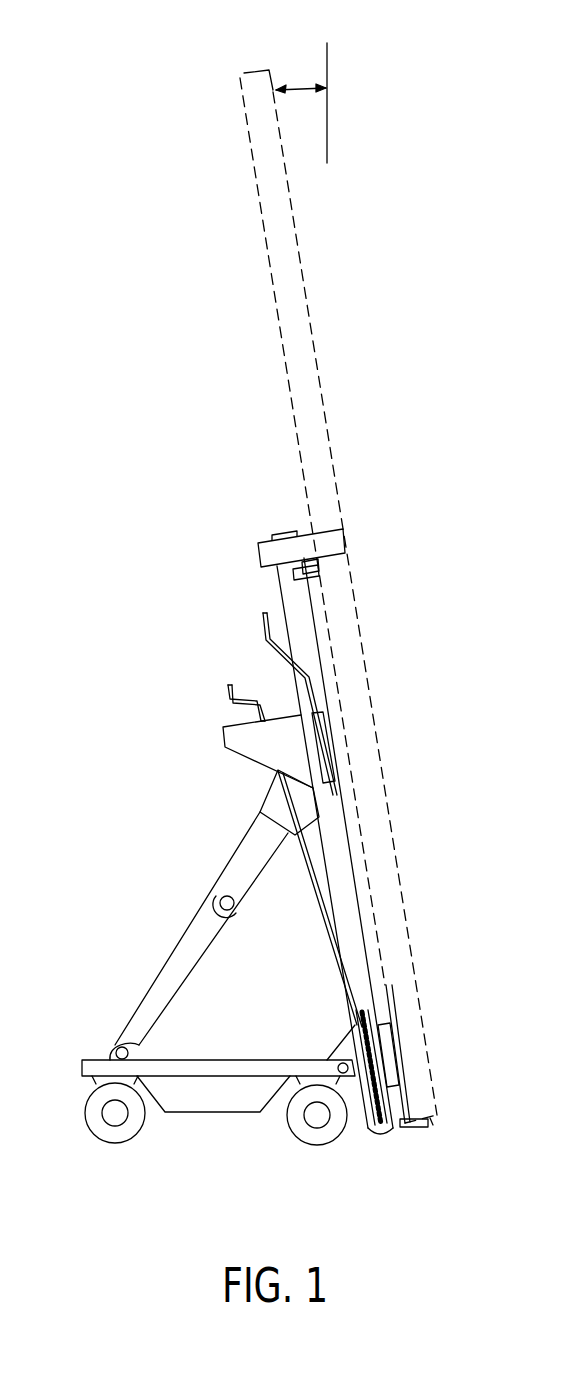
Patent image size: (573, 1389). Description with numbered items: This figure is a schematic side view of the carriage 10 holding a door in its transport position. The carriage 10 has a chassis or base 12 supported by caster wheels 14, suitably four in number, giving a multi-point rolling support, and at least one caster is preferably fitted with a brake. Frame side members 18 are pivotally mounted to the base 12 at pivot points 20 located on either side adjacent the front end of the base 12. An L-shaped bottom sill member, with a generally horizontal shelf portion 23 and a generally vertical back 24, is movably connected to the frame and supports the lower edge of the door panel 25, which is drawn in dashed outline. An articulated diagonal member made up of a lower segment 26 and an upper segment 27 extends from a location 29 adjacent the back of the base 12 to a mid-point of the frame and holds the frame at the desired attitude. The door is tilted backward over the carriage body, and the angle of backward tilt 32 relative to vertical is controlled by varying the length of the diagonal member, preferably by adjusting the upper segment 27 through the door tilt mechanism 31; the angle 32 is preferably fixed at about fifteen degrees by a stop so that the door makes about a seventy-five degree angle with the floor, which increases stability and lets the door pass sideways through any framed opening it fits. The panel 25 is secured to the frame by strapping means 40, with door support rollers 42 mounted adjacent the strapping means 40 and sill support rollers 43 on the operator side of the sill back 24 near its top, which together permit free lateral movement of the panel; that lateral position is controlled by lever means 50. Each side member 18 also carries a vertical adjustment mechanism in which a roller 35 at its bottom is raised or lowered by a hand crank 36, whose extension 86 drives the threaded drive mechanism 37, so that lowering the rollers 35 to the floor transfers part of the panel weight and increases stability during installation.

The carriage 10 is at (157, 820).
The base 12 is at (212, 1085).
The caster wheels 14 is at (90, 1115).
The frame side members 18 is at (292, 595).
The pivot points 20 is at (343, 1058).
The shelf portion 23 is at (418, 1126).
The back 24 is at (398, 1128).
The door panel 25 is at (390, 830).
The lower segment 26 is at (174, 980).
The upper segment 27 is at (245, 880).
The location 29 is at (122, 1047).
The door tilt mechanism 31 is at (278, 813).
The angle of backward tilt 32 is at (297, 88).
The roller 35 is at (385, 1132).
The hand crank 36 is at (228, 698).
The threaded drive mechanism 37 is at (347, 1017).
The strapping means 40 is at (263, 553).
The door support rollers 42 is at (320, 571).
The sill support rollers 43 is at (393, 1030).
The lever means 50 is at (264, 631).
The extension 86 is at (320, 905).